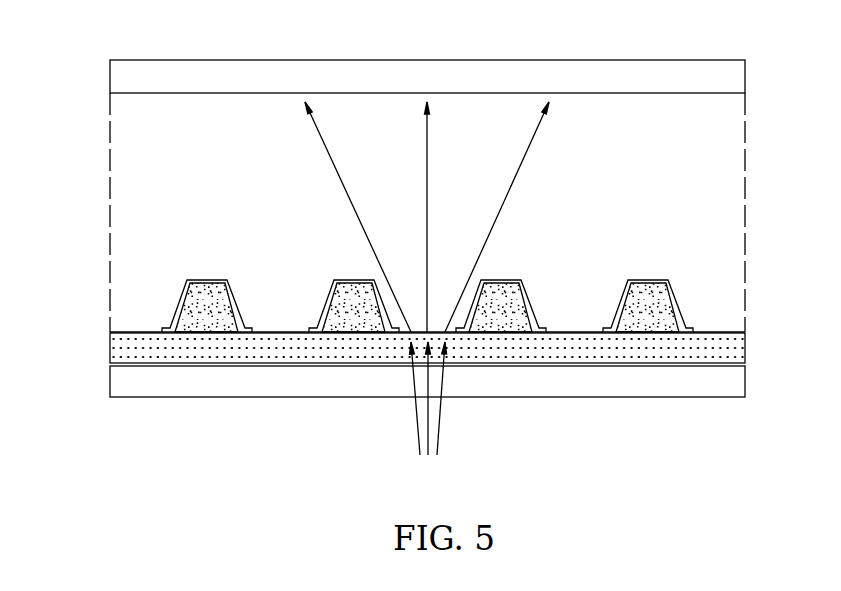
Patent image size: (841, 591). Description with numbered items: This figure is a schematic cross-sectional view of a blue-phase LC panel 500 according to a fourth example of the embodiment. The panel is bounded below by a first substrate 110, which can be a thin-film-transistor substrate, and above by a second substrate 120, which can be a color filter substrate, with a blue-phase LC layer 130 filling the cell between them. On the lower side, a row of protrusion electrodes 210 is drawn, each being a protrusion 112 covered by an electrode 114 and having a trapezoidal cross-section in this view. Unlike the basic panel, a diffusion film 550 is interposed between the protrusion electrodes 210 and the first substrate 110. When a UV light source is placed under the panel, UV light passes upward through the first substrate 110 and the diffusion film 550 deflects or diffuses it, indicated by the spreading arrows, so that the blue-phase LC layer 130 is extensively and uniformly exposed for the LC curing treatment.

The blue-phase LC panel 500 is at (746, 27).
The second substrate 120 is at (738, 79).
The blue-phase LC layer 130 is at (737, 221).
The protrusion electrode 210 is at (349, 291).
The electrode 114 is at (185, 289).
The protrusion 112 is at (192, 318).
The diffusion film 550 is at (738, 358).
The first substrate 110 is at (738, 393).